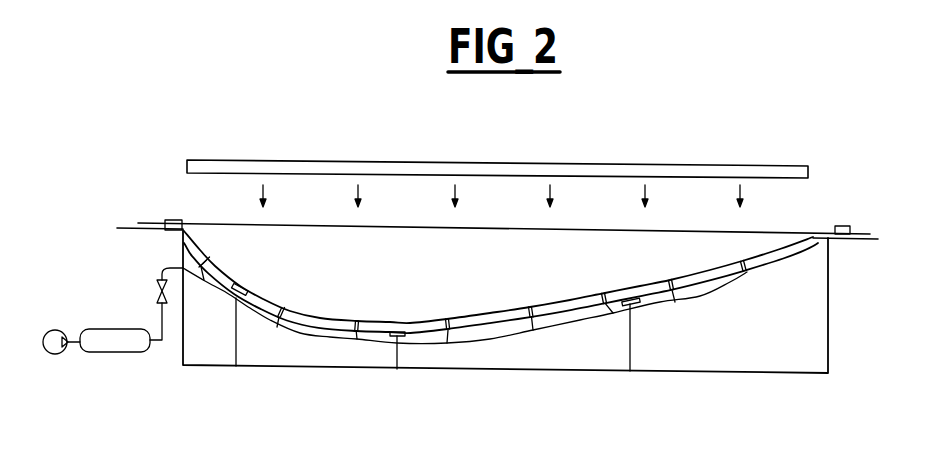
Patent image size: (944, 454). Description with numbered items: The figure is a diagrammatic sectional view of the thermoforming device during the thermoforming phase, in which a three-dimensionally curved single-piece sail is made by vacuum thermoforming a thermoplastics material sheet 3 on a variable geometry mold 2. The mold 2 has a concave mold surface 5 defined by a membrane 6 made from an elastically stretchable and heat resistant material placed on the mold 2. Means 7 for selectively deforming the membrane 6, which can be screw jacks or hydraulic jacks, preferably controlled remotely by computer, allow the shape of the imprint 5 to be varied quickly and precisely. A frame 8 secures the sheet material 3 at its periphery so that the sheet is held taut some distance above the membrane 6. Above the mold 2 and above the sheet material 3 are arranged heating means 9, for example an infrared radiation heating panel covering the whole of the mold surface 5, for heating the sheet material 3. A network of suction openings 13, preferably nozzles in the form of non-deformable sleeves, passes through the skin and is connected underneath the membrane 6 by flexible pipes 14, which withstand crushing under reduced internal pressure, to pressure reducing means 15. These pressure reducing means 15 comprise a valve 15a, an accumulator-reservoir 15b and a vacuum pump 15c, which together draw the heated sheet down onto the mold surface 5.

The variable geometry mold 2 is at (838, 293).
The thermoplastics material sheet 3 is at (783, 232).
The concave mold surface 5 is at (400, 317).
The membrane 6 is at (315, 310).
The means for selectively deforming the membrane 7 is at (400, 355).
The frame 8 is at (172, 218).
The heating means 9 is at (660, 177).
The suction openings 13 is at (530, 314).
The flexible pipes 14 is at (300, 337).
The pressure reducing means 15 is at (113, 322).
The valve 15a is at (160, 281).
The accumulator-reservoir 15b is at (99, 335).
The vacuum pump 15c is at (62, 352).